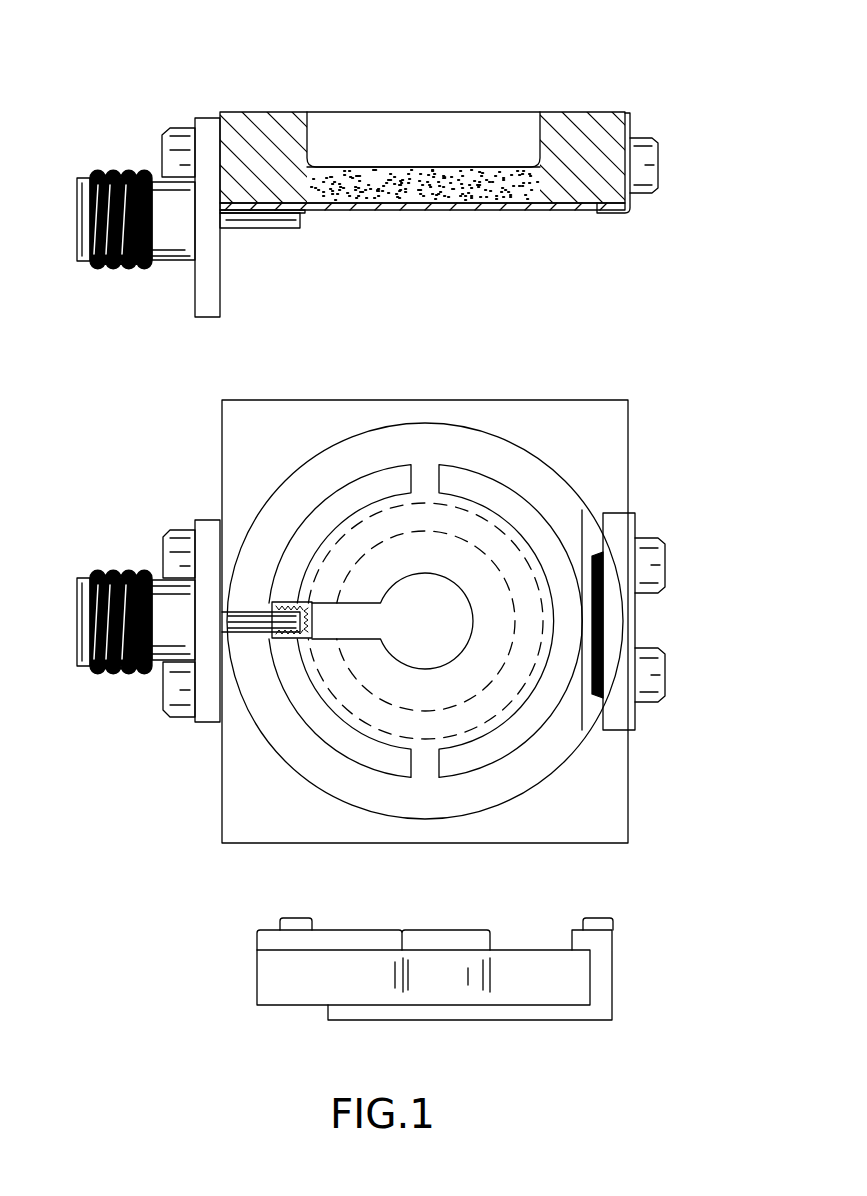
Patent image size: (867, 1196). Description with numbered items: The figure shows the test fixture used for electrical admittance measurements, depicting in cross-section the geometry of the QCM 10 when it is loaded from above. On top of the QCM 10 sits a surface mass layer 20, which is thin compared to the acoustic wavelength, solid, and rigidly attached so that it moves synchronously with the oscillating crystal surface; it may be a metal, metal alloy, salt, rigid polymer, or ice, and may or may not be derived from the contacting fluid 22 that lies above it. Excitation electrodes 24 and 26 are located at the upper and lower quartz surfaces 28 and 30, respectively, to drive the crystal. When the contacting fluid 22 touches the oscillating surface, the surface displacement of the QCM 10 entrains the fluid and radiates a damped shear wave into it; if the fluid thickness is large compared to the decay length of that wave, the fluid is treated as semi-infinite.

The QCM 10 is at (427, 290).
The surface mass layer 20 is at (363, 198).
The contacting fluid 22 is at (429, 165).
The excitation electrode 24 is at (239, 203).
The excitation electrode 26 is at (631, 124).
The upper quartz surface 28 is at (577, 203).
The lower quartz surface 30 is at (578, 212).